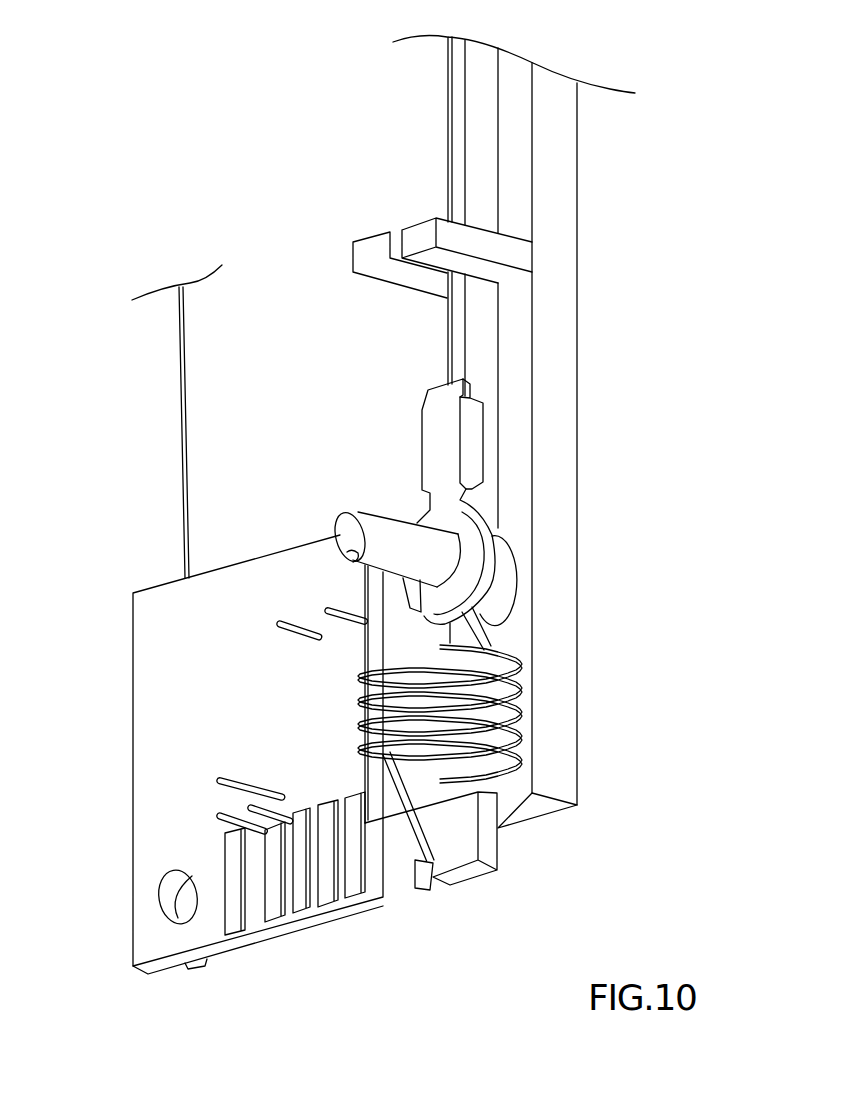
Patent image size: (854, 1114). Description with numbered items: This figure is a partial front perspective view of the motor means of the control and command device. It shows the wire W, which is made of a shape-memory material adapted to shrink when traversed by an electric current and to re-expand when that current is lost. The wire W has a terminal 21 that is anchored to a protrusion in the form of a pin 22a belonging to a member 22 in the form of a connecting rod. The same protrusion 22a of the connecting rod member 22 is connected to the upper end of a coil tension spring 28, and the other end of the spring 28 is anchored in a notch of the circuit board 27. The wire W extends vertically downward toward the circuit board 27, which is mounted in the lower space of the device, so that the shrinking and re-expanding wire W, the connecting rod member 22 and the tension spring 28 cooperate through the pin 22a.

The wire W is at (447, 80).
The terminal 21 is at (445, 443).
The connecting rod member 22 is at (578, 362).
The pin 22a is at (397, 540).
The circuit board 27 is at (162, 762).
The coil tension spring 28 is at (507, 698).